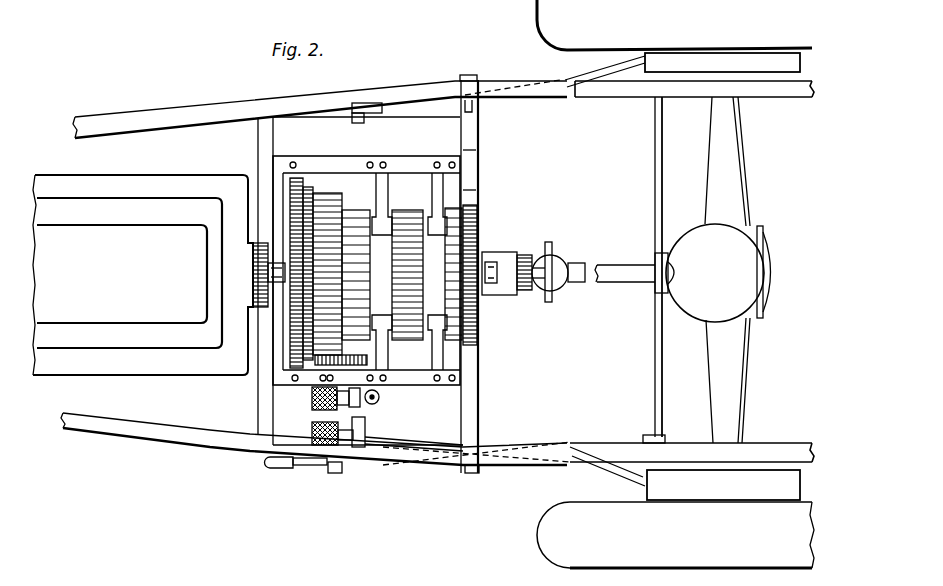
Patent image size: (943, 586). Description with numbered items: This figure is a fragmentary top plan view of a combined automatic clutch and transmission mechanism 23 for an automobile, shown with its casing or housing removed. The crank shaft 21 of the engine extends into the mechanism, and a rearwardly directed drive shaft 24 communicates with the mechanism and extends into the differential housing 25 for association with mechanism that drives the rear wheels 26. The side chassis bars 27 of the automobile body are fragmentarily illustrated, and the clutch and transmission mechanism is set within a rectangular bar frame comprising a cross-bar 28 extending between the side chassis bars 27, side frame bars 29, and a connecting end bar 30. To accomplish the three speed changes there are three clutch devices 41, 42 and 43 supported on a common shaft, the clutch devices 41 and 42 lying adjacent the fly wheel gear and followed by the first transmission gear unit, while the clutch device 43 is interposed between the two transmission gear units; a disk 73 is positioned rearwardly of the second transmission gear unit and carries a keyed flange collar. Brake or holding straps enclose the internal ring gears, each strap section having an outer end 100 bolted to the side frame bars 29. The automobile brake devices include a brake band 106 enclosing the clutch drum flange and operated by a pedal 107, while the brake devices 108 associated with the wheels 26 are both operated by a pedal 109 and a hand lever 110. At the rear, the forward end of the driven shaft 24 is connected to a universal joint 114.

The crank shaft 21 is at (263, 275).
The combined clutch and transmission mechanism 23 is at (365, 188).
The drive shaft 24 is at (608, 263).
The differential housing 25 is at (727, 245).
The rear wheels 26 is at (548, 10).
The side chassis bars 27 is at (240, 92).
The cross-bar 28 is at (471, 193).
The side frame bars 29 is at (138, 184).
The connecting end bar 30 is at (277, 193).
The clutch device 41 is at (338, 358).
The clutch device 42 is at (350, 210).
The clutch device 43 is at (408, 318).
The disk 73 is at (477, 230).
The outer end of strap section 100 is at (382, 162).
The brake band 106 is at (318, 174).
The pedal 107 is at (312, 402).
The brake devices 108 is at (776, 62).
The pedal 109 is at (312, 431).
The hand lever 110 is at (305, 465).
The universal joint 114 is at (557, 247).